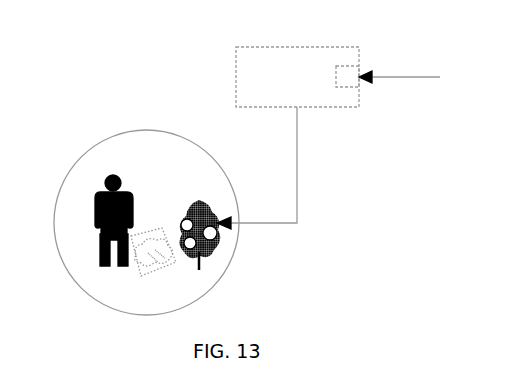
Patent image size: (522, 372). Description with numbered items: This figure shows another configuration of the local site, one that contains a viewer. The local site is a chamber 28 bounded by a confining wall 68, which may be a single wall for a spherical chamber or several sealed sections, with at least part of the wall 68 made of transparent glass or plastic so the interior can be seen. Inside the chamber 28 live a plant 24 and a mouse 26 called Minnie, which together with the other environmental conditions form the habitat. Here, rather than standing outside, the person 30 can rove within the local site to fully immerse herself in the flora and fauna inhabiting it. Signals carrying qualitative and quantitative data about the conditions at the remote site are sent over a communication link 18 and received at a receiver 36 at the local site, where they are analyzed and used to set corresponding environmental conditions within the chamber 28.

The communication link 18 is at (397, 76).
The receiver 36 is at (351, 72).
The chamber 28 is at (101, 135).
The confining wall 68 is at (62, 262).
The person 30 is at (97, 201).
The plant 24 is at (203, 237).
The mouse 26 is at (176, 262).